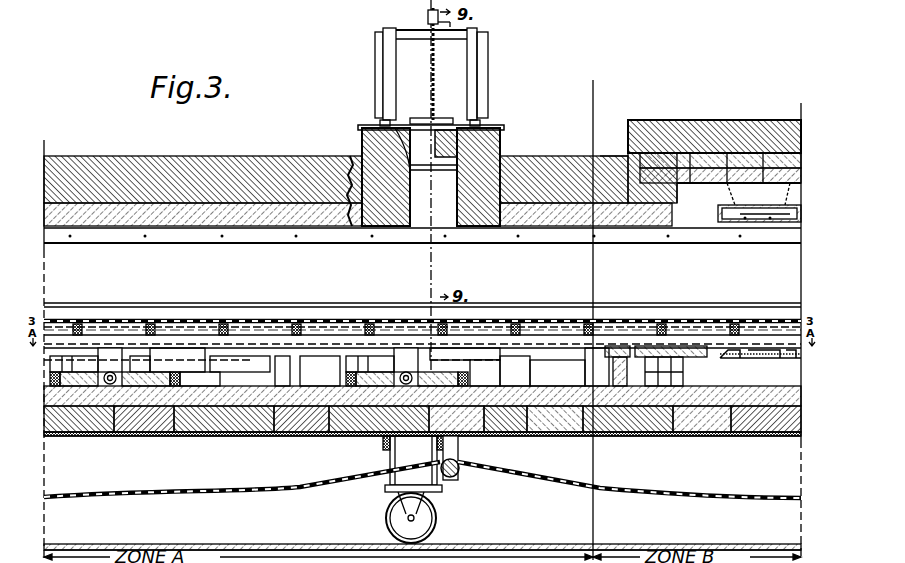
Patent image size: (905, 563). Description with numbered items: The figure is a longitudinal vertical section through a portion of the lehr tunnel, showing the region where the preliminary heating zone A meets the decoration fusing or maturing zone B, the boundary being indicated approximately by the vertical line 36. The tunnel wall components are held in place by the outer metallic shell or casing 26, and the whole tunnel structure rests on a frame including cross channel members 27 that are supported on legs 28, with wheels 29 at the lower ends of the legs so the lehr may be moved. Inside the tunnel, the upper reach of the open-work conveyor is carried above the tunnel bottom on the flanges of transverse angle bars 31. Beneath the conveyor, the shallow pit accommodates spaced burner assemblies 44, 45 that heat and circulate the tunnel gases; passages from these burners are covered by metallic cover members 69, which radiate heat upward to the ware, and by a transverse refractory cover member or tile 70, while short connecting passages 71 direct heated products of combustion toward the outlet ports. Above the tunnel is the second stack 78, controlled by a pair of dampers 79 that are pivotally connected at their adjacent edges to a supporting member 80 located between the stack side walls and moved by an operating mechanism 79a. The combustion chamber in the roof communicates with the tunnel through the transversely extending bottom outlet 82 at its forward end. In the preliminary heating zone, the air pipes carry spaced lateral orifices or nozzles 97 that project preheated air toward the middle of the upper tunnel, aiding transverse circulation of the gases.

The operating mechanism 79a is at (452, 30).
The dampers 79 is at (400, 130).
The supporting member 80 is at (448, 132).
The second stack 78 is at (498, 140).
The vertical line 36 is at (596, 104).
The lateral orifices or nozzles 97 is at (296, 238).
The bottom outlet 82 is at (672, 218).
The transverse angle bars 31 is at (530, 322).
The transverse refractory cover member or tile 70 is at (665, 350).
The connecting passages 71 is at (650, 372).
The metallic cover members 69 is at (752, 358).
The burner assembly 44 is at (110, 385).
The burner assembly 45 is at (410, 382).
The outer metallic shell or casing 26 is at (160, 436).
The cross channel members 27 is at (388, 456).
The legs 28 is at (413, 478).
The wheels 29 is at (424, 518).